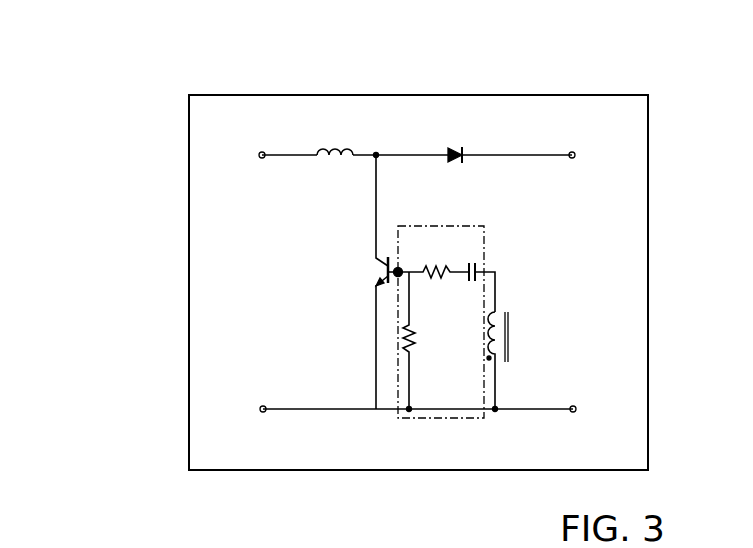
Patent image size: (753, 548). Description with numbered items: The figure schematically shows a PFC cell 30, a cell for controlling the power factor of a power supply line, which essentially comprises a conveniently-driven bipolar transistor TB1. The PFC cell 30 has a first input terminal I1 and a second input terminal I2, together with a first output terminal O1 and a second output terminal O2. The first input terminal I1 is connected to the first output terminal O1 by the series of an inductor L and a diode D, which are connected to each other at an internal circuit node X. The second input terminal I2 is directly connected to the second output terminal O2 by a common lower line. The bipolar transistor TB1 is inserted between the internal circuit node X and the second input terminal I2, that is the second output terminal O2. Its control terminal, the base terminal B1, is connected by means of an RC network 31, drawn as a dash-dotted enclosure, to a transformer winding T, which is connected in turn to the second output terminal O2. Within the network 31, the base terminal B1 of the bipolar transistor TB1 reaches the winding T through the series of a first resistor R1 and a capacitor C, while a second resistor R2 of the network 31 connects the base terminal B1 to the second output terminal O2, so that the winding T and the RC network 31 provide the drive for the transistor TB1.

The PFC cell 30 is at (124, 101).
The RC network 31 is at (453, 237).
The internal circuit node X is at (377, 155).
The inductor L is at (335, 137).
The diode D is at (453, 139).
The first input terminal I1 is at (258, 156).
The second input terminal I2 is at (259, 410).
The first output terminal O1 is at (576, 156).
The second output terminal O2 is at (577, 410).
The bipolar transistor TB1 is at (349, 282).
The base terminal B1 is at (390, 283).
The first resistor R1 is at (433, 262).
The second resistor R2 is at (427, 342).
The capacitor C is at (479, 279).
The transformer winding T is at (512, 362).